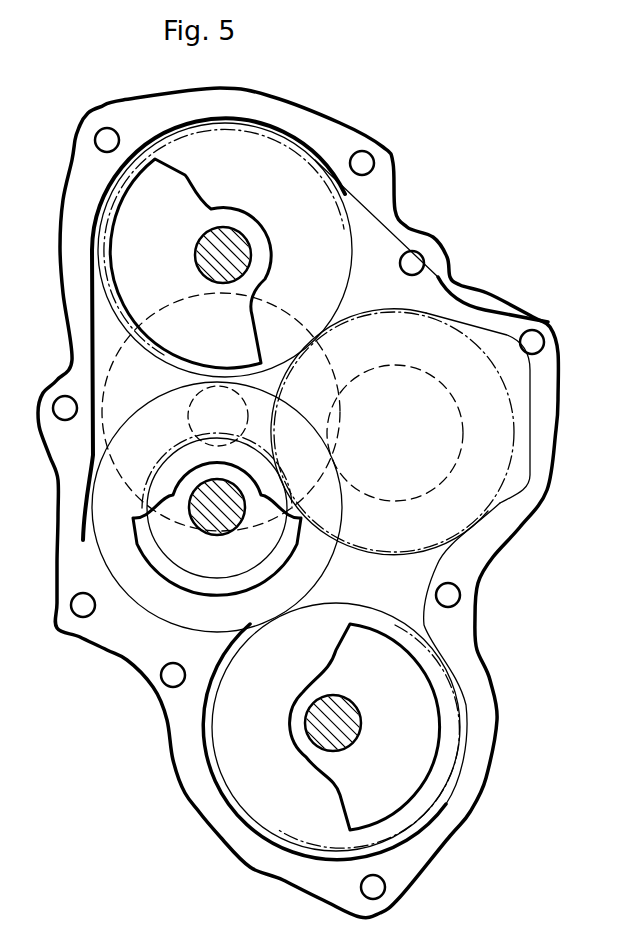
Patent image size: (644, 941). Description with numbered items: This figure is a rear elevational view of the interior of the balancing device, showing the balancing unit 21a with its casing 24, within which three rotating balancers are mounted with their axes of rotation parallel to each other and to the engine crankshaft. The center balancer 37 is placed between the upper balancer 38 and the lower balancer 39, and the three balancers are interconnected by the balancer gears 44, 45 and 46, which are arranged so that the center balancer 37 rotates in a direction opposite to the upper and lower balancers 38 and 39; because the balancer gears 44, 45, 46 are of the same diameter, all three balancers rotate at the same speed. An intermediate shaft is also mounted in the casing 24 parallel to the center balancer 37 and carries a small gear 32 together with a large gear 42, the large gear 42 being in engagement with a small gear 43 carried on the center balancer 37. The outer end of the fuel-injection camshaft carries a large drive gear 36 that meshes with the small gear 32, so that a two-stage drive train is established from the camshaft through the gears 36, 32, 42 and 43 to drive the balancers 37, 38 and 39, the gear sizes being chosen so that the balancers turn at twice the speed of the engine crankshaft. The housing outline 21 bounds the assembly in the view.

The pump housing 21 is at (436, 261).
The balancing unit 21a is at (457, 367).
The casing 24 is at (473, 607).
The small gear 32 is at (463, 444).
The large drive gear 36 is at (118, 352).
The center balancer 37 is at (241, 560).
The upper balancer 38 is at (184, 268).
The lower balancer 39 is at (410, 765).
The large gear 42 is at (497, 504).
The small gear 43 is at (133, 517).
The balancer gear 44 is at (147, 487).
The balancer gear 45 is at (301, 141).
The balancer gear 46 is at (222, 778).